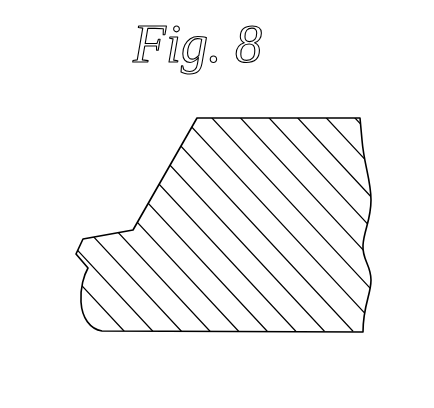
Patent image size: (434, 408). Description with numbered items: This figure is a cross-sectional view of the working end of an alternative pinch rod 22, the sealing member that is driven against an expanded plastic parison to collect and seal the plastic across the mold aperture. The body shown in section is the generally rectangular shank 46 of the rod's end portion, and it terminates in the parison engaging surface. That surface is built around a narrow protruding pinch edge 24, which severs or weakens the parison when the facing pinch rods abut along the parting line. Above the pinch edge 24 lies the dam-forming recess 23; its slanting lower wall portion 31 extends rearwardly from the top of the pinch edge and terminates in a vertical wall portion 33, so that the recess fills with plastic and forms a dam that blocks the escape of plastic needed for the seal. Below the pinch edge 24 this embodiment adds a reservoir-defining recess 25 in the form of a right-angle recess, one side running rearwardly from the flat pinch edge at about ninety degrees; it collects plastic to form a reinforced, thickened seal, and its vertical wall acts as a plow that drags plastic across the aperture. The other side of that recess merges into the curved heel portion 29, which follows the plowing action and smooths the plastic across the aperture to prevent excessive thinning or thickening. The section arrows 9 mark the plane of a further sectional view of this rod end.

The section line 9- 9 is at (33, 131).
The pinch rod 22 is at (259, 294).
The dam-forming recess 23 is at (133, 218).
The pinch edge 24 is at (83, 239).
The reservoir-defining recess 25 is at (87, 268).
The curved heel portion 29 is at (86, 328).
The slanting lower wall portion 31 is at (102, 234).
The vertical wall portion 33 is at (179, 148).
The shank 46 is at (324, 118).